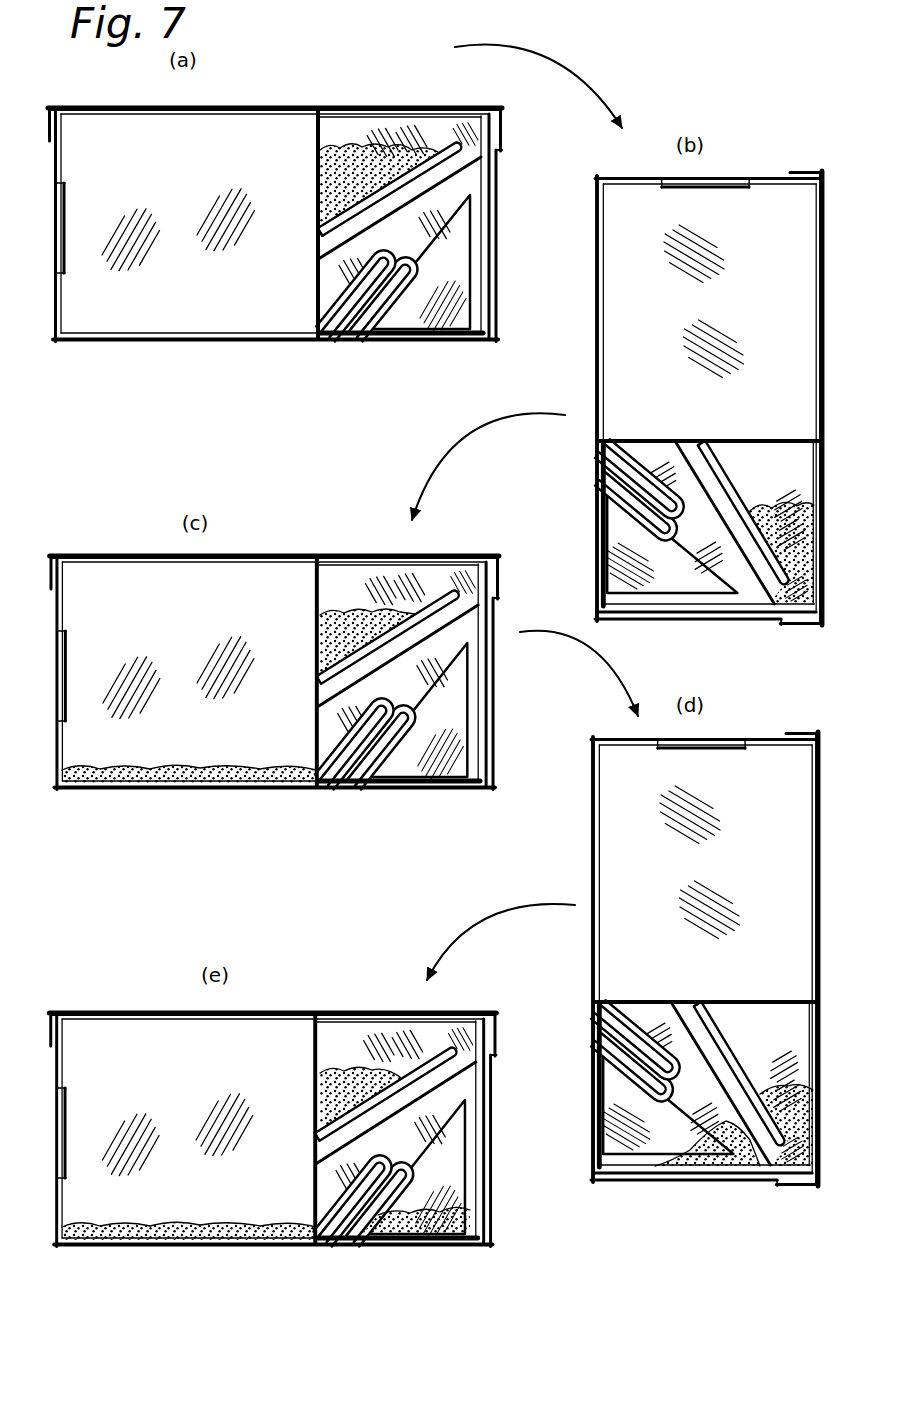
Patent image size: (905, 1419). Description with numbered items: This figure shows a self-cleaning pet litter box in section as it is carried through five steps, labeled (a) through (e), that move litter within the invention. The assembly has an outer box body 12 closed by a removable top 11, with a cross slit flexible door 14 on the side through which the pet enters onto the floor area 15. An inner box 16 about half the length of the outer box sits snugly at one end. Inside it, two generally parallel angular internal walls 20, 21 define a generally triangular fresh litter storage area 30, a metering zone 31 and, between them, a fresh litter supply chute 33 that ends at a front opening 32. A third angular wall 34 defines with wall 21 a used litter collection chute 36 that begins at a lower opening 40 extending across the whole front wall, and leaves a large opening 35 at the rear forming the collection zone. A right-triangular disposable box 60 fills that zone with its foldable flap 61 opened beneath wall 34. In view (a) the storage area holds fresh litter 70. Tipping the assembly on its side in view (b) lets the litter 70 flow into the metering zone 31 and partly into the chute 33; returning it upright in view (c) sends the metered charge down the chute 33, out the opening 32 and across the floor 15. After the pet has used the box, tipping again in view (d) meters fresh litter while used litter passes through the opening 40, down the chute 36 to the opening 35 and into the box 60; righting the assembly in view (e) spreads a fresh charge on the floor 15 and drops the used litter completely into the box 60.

The removable top 11 is at (150, 107).
The outer box body 12 is at (499, 237).
The cross slit flexible door 14 is at (62, 228).
The floor area 15 is at (120, 334).
The inner box 16 is at (310, 124).
The internal wall 20 is at (448, 128).
The internal wall 21 is at (462, 157).
The fresh litter storage area 30 is at (410, 128).
The metering zone 31 is at (483, 120).
The front opening 32 is at (326, 238).
The fresh litter supply chute 33 is at (328, 218).
The angular wall 34 is at (343, 330).
The opening 35 is at (735, 1175).
The used litter collection chute 36 is at (330, 271).
The lower opening 40 is at (318, 305).
The disposable box 60 is at (462, 302).
The foldable flap 61 is at (388, 312).
The fresh litter 70 is at (345, 148).